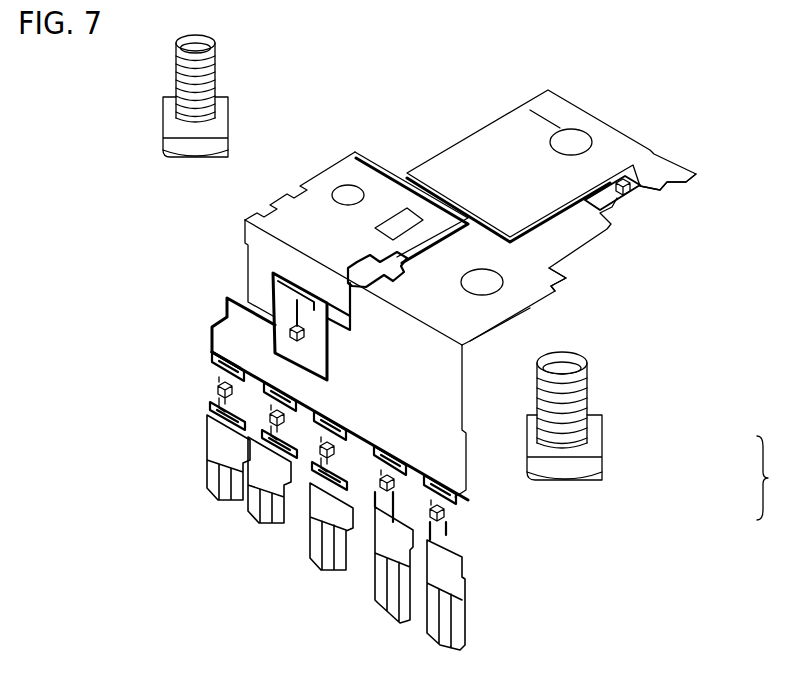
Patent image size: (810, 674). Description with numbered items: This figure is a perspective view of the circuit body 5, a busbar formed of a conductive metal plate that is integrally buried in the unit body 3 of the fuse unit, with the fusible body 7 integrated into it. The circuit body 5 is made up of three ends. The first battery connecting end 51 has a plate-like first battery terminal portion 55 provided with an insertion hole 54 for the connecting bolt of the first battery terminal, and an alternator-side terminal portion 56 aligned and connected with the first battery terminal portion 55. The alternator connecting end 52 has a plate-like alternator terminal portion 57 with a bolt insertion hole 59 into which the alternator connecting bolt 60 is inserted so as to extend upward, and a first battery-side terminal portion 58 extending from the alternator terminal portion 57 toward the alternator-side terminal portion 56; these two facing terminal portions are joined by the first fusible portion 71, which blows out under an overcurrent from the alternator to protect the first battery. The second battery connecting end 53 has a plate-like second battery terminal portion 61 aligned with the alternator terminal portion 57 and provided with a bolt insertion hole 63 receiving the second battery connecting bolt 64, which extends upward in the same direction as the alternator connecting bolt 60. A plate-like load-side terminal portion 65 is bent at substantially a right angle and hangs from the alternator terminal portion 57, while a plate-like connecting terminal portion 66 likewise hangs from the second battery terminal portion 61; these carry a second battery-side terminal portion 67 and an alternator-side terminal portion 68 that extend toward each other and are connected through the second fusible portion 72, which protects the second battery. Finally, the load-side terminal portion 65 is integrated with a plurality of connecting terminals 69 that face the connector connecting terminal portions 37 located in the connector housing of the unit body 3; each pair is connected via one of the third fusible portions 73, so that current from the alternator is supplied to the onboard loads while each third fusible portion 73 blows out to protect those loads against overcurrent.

The unit body 3 is at (449, 87).
The circuit body 5 is at (753, 478).
The fusible body 7 is at (704, 239).
The connector connecting terminal portions 37 is at (220, 477).
The first battery connecting end 51 is at (571, 134).
The alternator connecting end 52 is at (460, 348).
The second battery connecting end 53 is at (298, 209).
The insertion hole 54 is at (574, 140).
The first battery terminal portion 55 is at (545, 118).
The alternator-side terminal portion 56 is at (640, 188).
The alternator terminal portion 57 is at (529, 297).
The first battery-side terminal portion 58 is at (614, 206).
The bolt insertion hole 59 is at (484, 290).
The alternator connecting bolt 60 is at (590, 393).
The second battery terminal portion 61 is at (356, 218).
The bolt insertion hole 63 is at (357, 195).
The second battery connecting bolt 64 is at (178, 80).
The load-side terminal portion 65 is at (457, 470).
The connecting terminal portion 66 is at (258, 268).
The second battery-side terminal portion 67 is at (312, 352).
The alternator-side terminal portion 68 is at (258, 318).
The connecting terminals 69 is at (447, 495).
The first fusible portion 71 is at (618, 199).
The second fusible portion 72 is at (305, 330).
The third fusible portions 73 is at (447, 517).